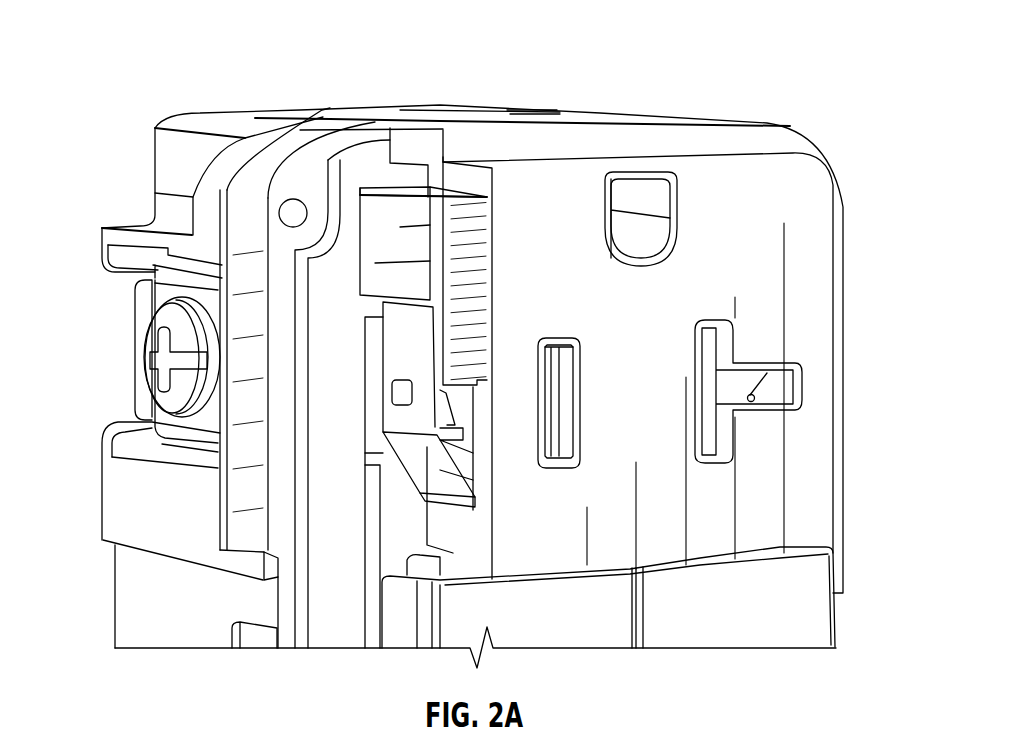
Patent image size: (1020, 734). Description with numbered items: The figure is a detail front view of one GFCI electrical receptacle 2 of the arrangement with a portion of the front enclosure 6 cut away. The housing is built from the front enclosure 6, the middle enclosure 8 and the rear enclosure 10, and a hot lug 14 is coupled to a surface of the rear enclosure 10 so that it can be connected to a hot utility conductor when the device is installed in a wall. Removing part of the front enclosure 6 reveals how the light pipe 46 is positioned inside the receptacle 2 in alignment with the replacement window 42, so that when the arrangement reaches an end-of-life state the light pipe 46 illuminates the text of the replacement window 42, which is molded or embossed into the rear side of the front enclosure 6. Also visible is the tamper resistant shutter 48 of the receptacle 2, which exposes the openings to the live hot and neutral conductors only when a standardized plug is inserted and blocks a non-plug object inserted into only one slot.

The GFCI electrical receptacle 2 is at (848, 273).
The front enclosure 6 is at (798, 147).
The middle enclosure 8 is at (317, 133).
The rear enclosure 10 is at (237, 118).
The hot lug 14 is at (135, 343).
The replacement window 42 is at (492, 313).
The light pipe 46 is at (467, 233).
The tamper resistant shutter 48 is at (400, 422).